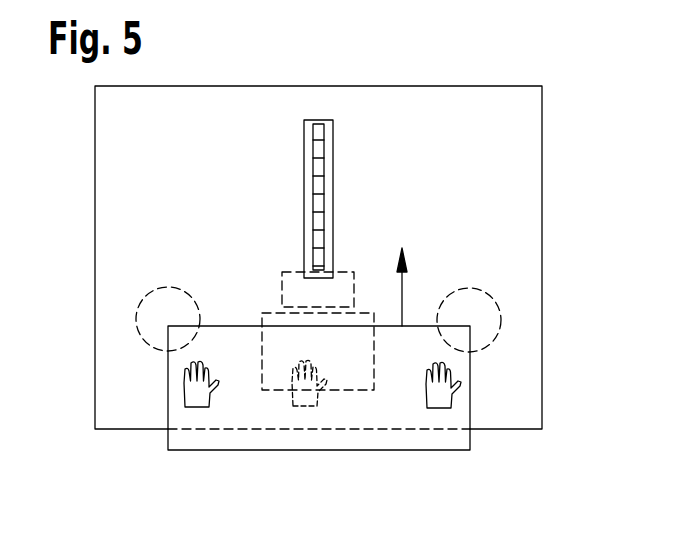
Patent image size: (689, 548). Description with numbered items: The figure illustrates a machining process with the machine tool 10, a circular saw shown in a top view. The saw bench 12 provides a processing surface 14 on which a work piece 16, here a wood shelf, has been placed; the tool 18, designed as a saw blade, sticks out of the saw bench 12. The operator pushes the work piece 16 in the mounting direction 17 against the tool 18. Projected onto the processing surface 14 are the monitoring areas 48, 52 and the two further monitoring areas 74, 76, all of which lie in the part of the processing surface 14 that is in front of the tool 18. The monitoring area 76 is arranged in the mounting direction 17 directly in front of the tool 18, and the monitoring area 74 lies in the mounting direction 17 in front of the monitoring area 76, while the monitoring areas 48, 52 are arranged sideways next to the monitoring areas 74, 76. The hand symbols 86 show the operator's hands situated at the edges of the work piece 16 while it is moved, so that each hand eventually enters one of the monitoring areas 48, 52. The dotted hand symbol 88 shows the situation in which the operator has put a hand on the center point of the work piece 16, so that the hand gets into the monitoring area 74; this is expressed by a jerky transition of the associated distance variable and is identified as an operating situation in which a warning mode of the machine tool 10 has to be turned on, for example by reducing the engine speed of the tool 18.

The machine tool 10 is at (597, 87).
The saw bench 12 is at (527, 185).
The processing surface 14 is at (490, 127).
The work piece 16 is at (472, 405).
The mounting direction 17 is at (404, 287).
The tool 18 is at (316, 190).
The monitoring area 48 is at (137, 318).
The monitoring area 52 is at (500, 313).
The monitoring area 74 is at (345, 390).
The monitoring area 76 is at (355, 278).
The hand symbols 86 is at (196, 406).
The dotted hand symbol 88 is at (300, 401).